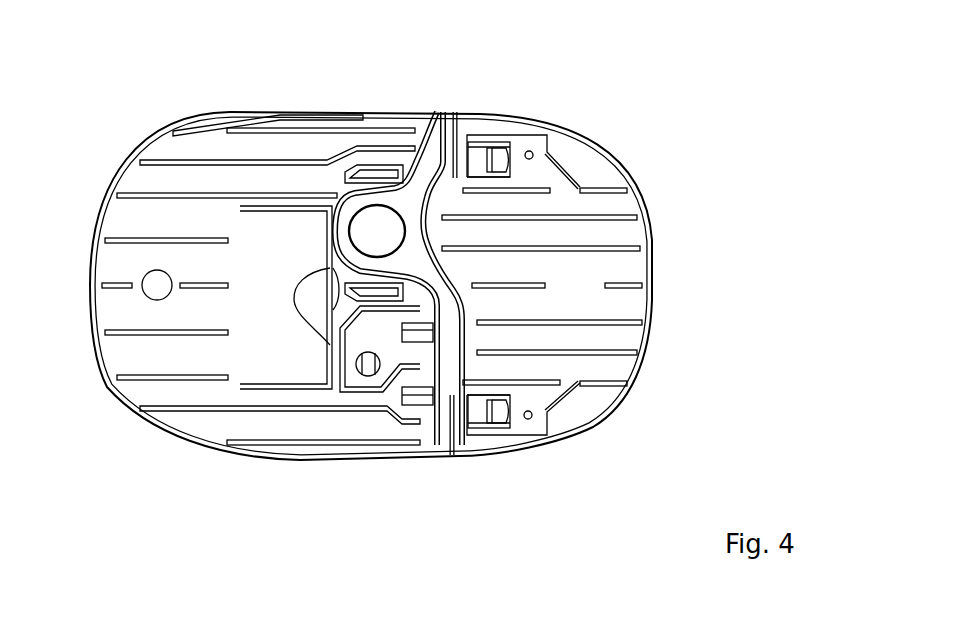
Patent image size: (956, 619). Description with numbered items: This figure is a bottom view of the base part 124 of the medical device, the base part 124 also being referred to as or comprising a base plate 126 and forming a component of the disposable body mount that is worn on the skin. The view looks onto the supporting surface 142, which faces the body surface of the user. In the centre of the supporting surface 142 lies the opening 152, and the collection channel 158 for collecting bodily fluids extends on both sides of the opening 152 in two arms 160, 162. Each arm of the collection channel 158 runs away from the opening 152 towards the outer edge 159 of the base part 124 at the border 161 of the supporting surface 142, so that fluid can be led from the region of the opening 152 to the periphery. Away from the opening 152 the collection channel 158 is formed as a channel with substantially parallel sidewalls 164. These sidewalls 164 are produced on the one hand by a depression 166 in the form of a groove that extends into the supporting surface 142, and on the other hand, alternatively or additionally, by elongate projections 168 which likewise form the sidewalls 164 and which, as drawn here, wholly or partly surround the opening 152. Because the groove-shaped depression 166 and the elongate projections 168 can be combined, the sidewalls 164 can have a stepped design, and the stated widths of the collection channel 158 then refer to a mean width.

The base part 124 is at (627, 207).
The base plate 126 is at (633, 172).
The supporting surface 142 is at (633, 272).
The opening 152 is at (365, 220).
The collection channel 158 is at (450, 112).
The outer edge 159 is at (332, 108).
The border 161 is at (371, 285).
The arm 160 is at (462, 162).
The arm 162 is at (478, 368).
The sidewalls 164 is at (467, 340).
The depression 166 is at (447, 145).
The elongate projections 168 is at (400, 293).